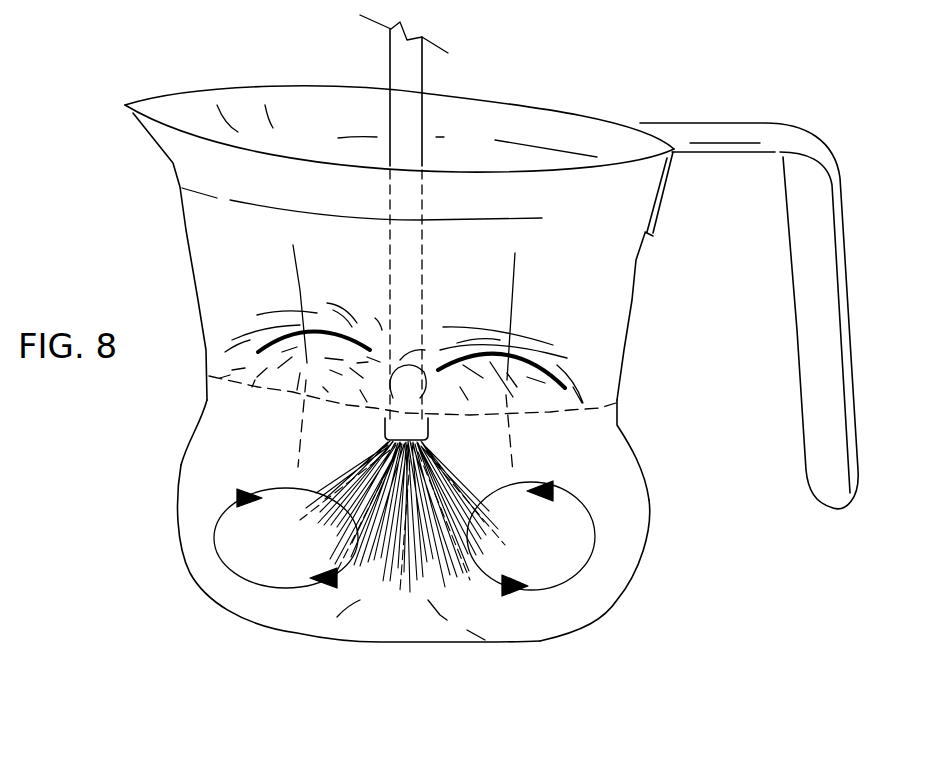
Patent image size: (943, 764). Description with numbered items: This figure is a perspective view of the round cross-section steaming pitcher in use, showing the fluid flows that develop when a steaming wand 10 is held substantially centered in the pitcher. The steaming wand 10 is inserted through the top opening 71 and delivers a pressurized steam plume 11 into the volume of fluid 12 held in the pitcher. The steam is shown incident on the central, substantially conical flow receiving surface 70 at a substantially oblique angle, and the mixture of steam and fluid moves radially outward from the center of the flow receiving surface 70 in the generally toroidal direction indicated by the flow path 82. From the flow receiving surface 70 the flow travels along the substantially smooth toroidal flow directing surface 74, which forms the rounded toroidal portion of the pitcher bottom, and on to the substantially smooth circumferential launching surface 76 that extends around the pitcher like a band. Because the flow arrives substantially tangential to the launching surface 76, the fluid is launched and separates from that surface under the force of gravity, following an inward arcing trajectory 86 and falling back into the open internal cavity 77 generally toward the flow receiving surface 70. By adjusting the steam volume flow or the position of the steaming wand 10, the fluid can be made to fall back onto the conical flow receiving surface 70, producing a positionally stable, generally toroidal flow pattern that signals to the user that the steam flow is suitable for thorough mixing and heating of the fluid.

The steaming wand 10 is at (400, 108).
The pressurized steam plume 11 is at (412, 485).
The volume of fluid 12 is at (592, 460).
The flow receiving surface 70 is at (398, 548).
The top opening 71 is at (477, 150).
The flow directing surface 74 is at (216, 601).
The circumferential launching surface 76 is at (205, 409).
The open internal cavity 77 is at (437, 335).
The flow path 82 is at (218, 558).
The inward arcing trajectory 86 is at (328, 332).